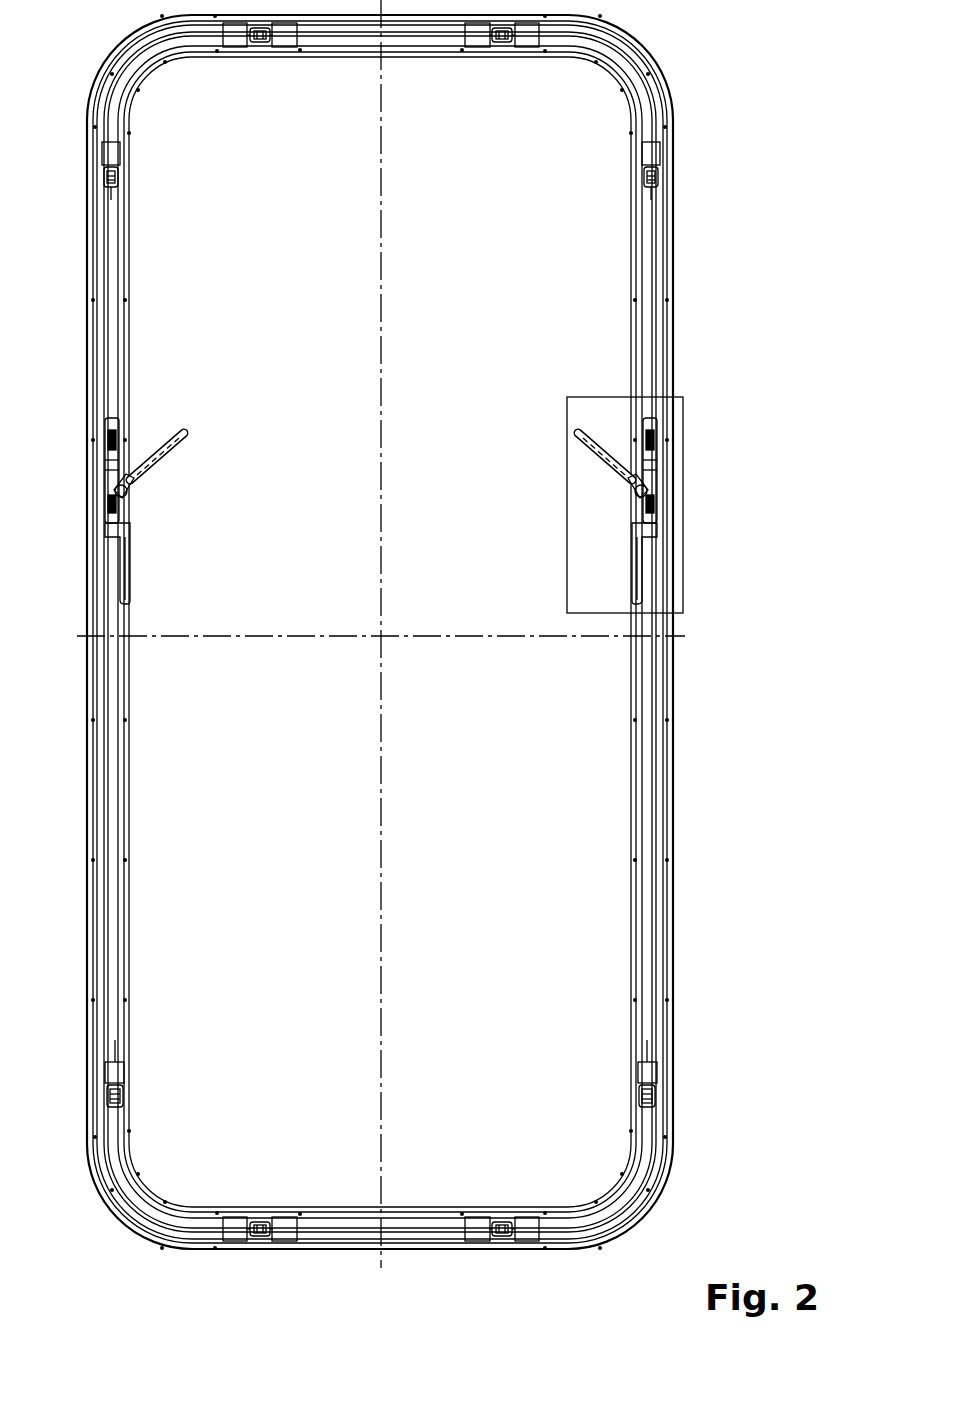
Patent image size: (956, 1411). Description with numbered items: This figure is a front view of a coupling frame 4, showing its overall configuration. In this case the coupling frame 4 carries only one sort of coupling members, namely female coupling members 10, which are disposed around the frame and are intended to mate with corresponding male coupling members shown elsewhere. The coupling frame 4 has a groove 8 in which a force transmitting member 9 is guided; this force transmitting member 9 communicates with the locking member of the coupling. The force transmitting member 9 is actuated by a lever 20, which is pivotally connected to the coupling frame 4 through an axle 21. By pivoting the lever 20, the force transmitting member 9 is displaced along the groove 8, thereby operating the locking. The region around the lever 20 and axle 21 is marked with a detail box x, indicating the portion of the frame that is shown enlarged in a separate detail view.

The coupling frame 4 is at (667, 772).
The groove 8 is at (653, 247).
The force transmitting member 9 is at (655, 320).
The female coupling member 10 is at (657, 1090).
The lever 20 is at (638, 580).
The axle 21 is at (653, 513).
The detail region x is at (688, 417).